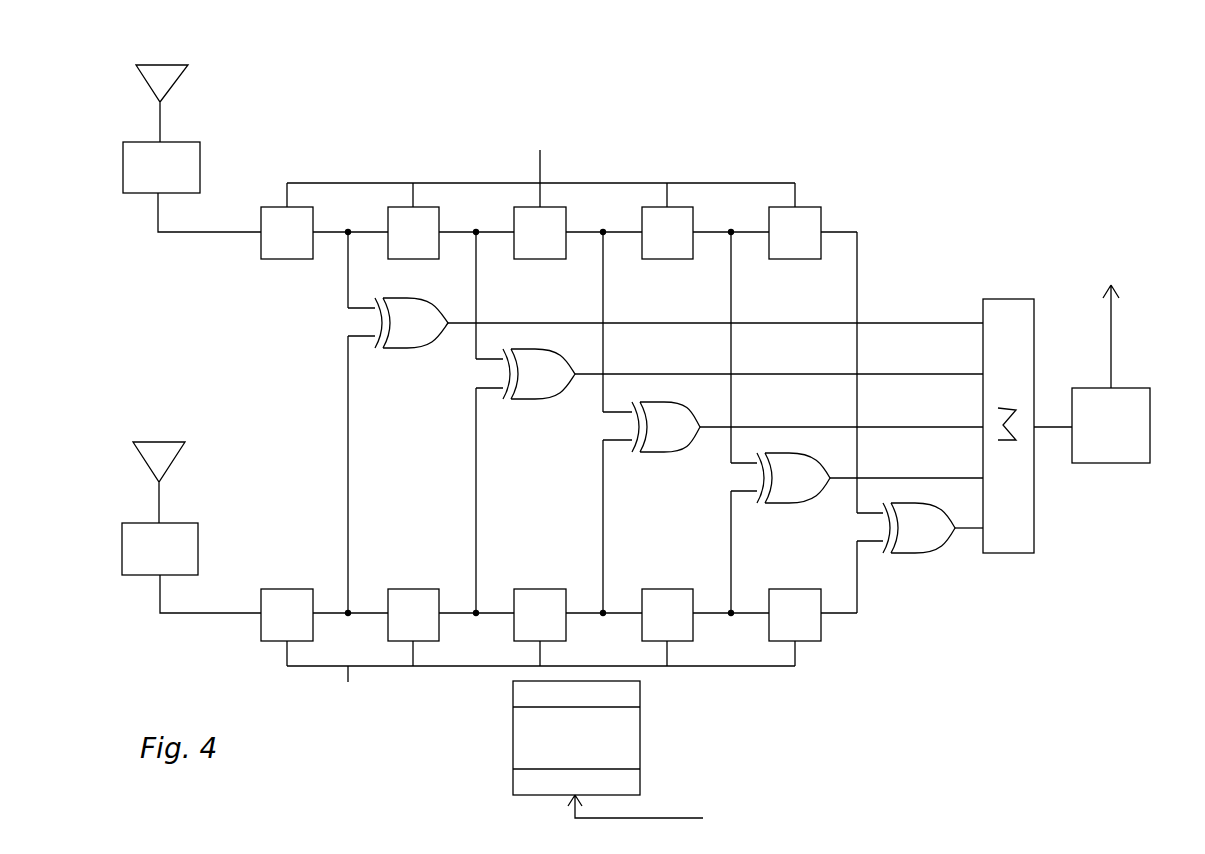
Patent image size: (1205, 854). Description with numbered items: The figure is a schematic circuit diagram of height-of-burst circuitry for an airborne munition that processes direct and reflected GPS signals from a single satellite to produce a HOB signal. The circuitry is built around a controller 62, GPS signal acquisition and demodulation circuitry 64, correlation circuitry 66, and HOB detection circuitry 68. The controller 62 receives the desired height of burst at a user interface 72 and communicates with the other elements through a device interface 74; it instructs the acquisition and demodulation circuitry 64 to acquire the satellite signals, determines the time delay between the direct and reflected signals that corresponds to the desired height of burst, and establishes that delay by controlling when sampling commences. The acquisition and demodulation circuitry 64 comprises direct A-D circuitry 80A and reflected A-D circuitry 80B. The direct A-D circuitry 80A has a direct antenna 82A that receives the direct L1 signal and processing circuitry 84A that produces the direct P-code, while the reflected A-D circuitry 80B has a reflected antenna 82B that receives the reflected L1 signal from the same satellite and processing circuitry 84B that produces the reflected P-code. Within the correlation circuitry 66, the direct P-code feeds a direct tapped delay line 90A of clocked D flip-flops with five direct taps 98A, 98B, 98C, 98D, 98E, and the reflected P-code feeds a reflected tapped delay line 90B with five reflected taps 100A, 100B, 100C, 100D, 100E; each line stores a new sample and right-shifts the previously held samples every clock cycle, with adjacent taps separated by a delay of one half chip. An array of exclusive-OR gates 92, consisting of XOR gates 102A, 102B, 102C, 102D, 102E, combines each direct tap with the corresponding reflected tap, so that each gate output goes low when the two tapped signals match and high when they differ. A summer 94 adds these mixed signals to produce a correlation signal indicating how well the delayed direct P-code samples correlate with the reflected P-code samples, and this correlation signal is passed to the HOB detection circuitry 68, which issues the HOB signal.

The controller 62 is at (581, 755).
The GPS signal acquisition and demodulation circuitry 64 is at (296, 124).
The correlation circuitry 66 is at (731, 101).
The HOB detection circuitry 68 is at (1115, 475).
The user interface 72 is at (645, 783).
The device interface 74 is at (645, 694).
The direct A-D circuitry 80A is at (161, 169).
The reflected A-D circuitry 80B is at (155, 500).
The direct antenna 82A is at (133, 82).
The reflected antenna 82B is at (128, 455).
The processing circuitry 84A is at (205, 160).
The processing circuitry 84B is at (112, 538).
The direct tapped delay line 90A is at (612, 217).
The reflected tapped delay line 90B is at (614, 614).
The array of exclusive-OR gates 92 is at (600, 422).
The summer 94 is at (1005, 565).
The direct tap 98A is at (341, 271).
The direct tap 98B is at (470, 266).
The direct tap 98C is at (596, 268).
The direct tap 98D is at (725, 268).
The direct tap 98E is at (845, 268).
The reflected tap 100A is at (330, 505).
The reflected tap 100B is at (470, 505).
The reflected tap 100C is at (598, 506).
The reflected tap 100D is at (723, 513).
The reflected tap 100E is at (845, 554).
The XOR gate 102A is at (388, 363).
The XOR gate 102B is at (527, 398).
The XOR gate 102C is at (650, 461).
The XOR gate 102D is at (787, 504).
The XOR gate 102E is at (918, 556).